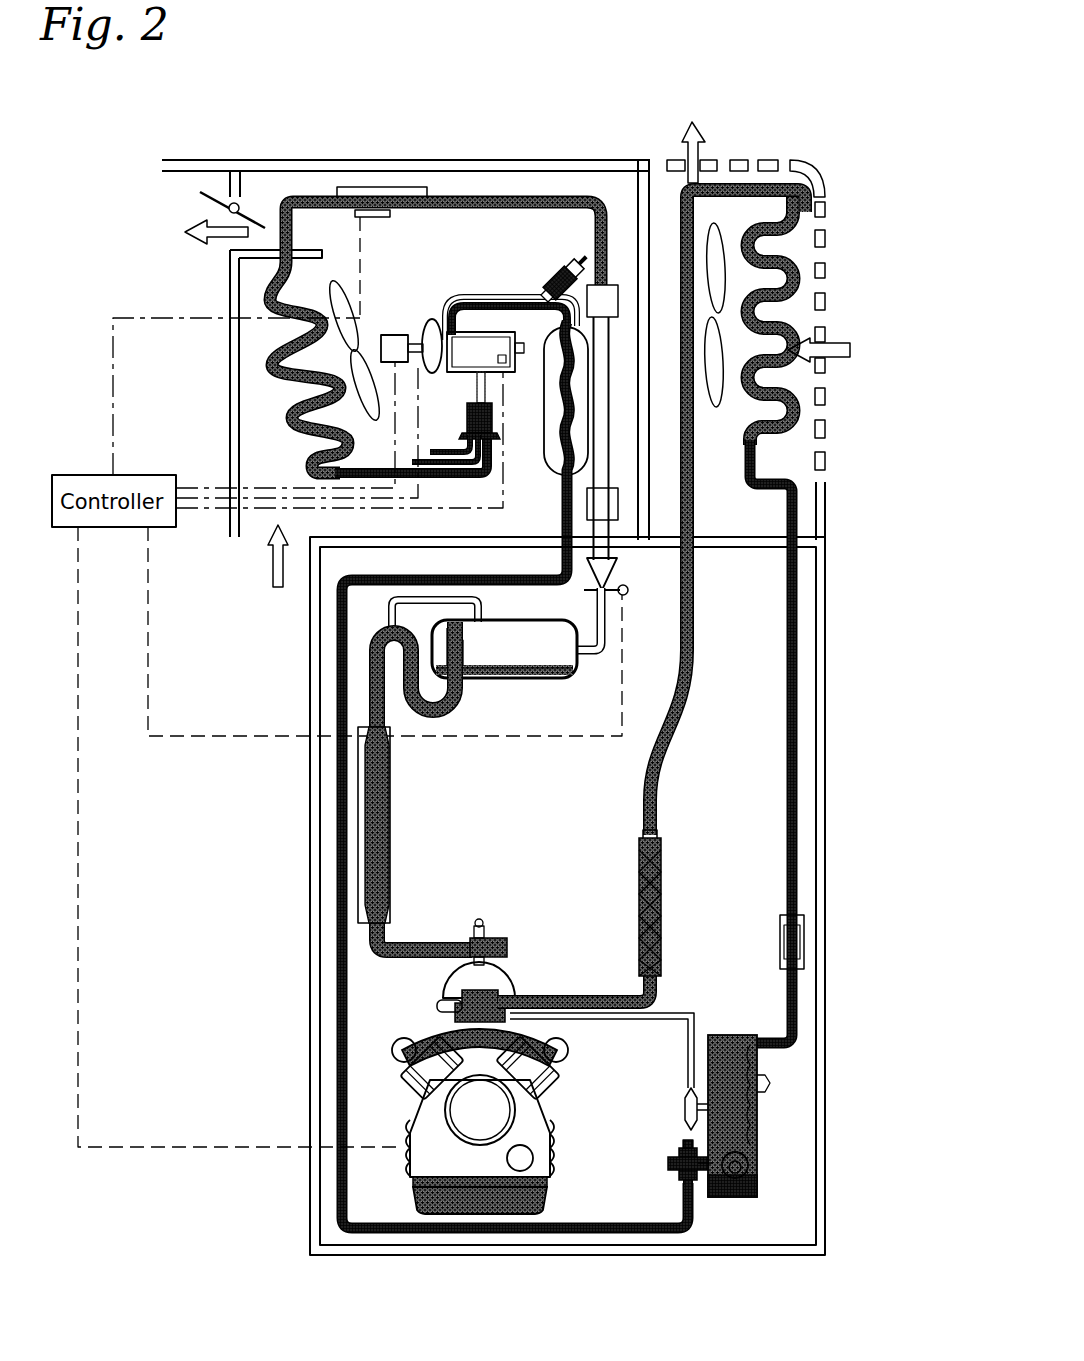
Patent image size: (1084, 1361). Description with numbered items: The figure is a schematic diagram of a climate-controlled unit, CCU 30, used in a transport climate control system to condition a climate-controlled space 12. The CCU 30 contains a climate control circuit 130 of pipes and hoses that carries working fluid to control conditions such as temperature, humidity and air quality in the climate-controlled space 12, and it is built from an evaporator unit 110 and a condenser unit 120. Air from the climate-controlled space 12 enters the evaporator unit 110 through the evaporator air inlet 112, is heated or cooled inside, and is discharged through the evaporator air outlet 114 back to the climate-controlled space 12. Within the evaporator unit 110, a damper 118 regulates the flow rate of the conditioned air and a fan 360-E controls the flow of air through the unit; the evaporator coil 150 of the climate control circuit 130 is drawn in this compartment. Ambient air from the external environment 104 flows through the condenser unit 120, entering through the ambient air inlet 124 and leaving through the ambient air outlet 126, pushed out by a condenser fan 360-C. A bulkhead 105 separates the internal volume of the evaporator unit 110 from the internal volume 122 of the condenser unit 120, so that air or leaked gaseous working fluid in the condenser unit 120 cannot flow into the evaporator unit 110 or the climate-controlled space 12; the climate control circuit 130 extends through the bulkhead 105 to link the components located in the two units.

The climate-controlled space 12 is at (188, 182).
The evaporator unit 110 is at (400, 150).
The climate control circuit 130 is at (311, 175).
The damper 118 is at (200, 206).
The evaporator air outlet 114 is at (230, 242).
The evaporator coil 150 is at (288, 368).
The fan 360-E is at (360, 347).
The bulkhead 105 is at (356, 545).
The evaporator air inlet 112 is at (262, 538).
The condenser unit 120 is at (364, 1268).
The internal volume of the condenser unit 122 is at (753, 527).
The external environment 104 is at (875, 500).
The climate-controlled unit 30 is at (853, 104).
The ambient air outlet 126 is at (720, 150).
The condenser fan 360-C is at (725, 255).
The ambient air inlet 124 is at (835, 312).